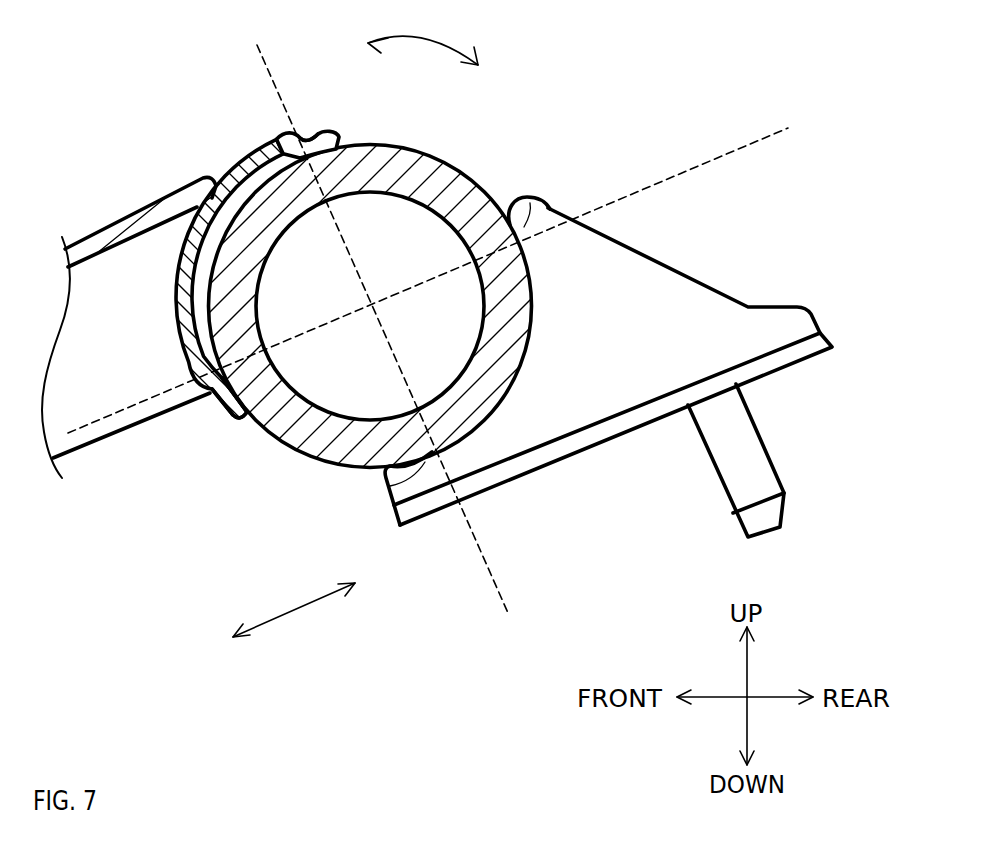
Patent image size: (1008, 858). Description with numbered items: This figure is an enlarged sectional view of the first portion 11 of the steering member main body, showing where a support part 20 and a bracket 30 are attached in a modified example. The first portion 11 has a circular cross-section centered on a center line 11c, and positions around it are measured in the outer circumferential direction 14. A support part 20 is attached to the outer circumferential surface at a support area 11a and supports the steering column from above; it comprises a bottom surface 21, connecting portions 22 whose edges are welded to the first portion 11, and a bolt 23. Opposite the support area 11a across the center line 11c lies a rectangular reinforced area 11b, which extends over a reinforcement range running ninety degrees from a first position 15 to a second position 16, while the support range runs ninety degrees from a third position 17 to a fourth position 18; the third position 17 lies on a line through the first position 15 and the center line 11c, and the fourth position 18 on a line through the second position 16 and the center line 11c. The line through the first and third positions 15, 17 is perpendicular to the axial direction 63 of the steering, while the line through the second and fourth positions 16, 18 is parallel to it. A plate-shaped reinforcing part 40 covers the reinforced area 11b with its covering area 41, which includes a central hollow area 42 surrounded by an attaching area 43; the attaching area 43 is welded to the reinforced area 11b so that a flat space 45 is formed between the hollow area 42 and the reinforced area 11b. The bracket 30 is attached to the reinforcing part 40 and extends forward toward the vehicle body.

The first portion 11 is at (448, 177).
The support area 11a is at (530, 203).
The reinforced area 11b is at (168, 408).
The center line 11c is at (370, 305).
The outer circumferential direction 14 is at (420, 35).
The first position 15 is at (306, 134).
The second position 16 is at (208, 403).
The third position 17 is at (389, 484).
The fourth position 18 is at (549, 208).
The support part 20 is at (613, 382).
The bottom surface 21 is at (600, 452).
The connecting portion 22 is at (628, 302).
The bolt 23 is at (733, 477).
The bracket 30 is at (112, 298).
The reinforcing part 40 is at (312, 282).
The covering area 41 is at (240, 285).
The hollow area 42 is at (188, 192).
The attaching area 43 is at (328, 134).
The space 45 is at (255, 146).
The axial direction 63 is at (290, 608).